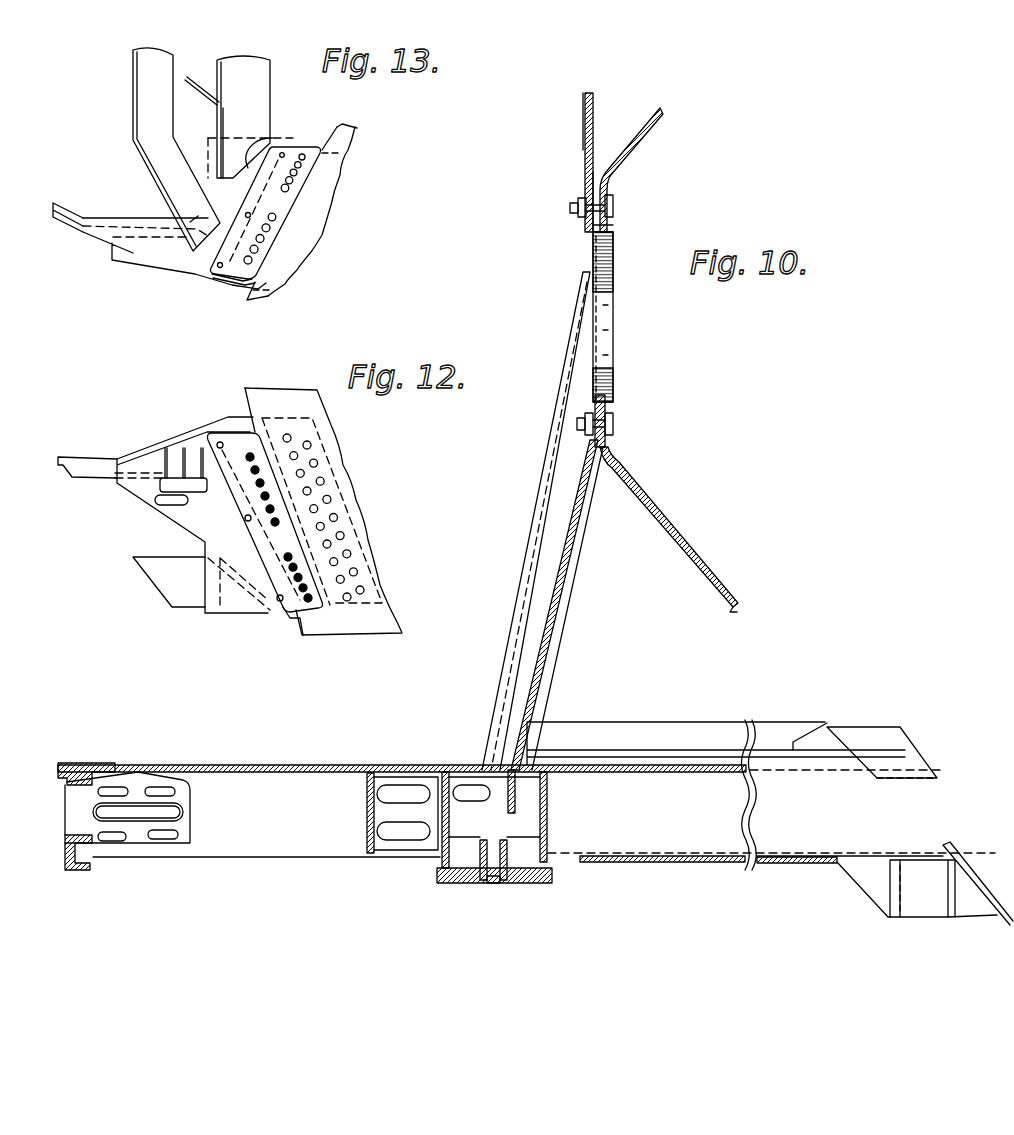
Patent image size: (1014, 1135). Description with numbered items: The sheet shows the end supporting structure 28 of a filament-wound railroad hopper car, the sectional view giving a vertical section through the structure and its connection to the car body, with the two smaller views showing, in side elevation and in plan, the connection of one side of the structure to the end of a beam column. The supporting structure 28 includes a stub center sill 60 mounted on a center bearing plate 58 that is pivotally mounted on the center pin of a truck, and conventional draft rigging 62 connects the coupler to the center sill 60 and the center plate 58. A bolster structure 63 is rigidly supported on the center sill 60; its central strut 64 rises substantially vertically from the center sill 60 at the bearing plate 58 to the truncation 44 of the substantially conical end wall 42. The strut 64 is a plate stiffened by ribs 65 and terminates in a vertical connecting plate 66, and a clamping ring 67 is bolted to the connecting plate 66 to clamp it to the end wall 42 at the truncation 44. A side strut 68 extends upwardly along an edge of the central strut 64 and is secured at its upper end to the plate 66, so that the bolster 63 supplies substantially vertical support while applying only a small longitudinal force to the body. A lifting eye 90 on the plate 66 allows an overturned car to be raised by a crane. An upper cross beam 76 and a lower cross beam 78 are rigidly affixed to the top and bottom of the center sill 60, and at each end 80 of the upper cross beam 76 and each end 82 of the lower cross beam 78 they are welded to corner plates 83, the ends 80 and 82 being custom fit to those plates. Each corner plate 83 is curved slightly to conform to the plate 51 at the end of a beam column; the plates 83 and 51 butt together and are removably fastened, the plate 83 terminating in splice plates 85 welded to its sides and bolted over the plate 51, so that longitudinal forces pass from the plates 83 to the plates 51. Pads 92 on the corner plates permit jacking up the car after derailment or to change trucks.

In FIG. 10, the supporting structure 28 is at (447, 730).
In FIG. 10, the end wall 42 is at (660, 113).
In FIG. 10, the truncation 44 is at (608, 192).
In FIG. 13, the plate 51 is at (249, 289).
In FIG. 12, the plate 51 is at (238, 422).
In FIG. 10, the center bearing plate 58 is at (540, 886).
In FIG. 10, the stub center sill 60 is at (637, 772).
In FIG. 10, the draft rigging 62 is at (207, 758).
In FIG. 10, the bolster structure 63 is at (532, 458).
In FIG. 10, the central strut 64 is at (570, 533).
In FIG. 10, the ribs 65 is at (530, 623).
In FIG. 10, the connecting plate 66 is at (593, 247).
In FIG. 10, the clamping ring 67 is at (610, 222).
In FIG. 10, the side strut 68 is at (572, 321).
In FIG. 13, the upper cross beam 76 is at (163, 97).
In FIG. 10, the upper cross beam 76 is at (907, 738).
In FIG. 13, the lower cross beam 78 is at (251, 97).
In FIG. 10, the lower cross beam 78 is at (952, 861).
In FIG. 13, the end of upper cross beam 80 is at (187, 223).
In FIG. 13, the end of lower cross beam 82 is at (270, 138).
In FIG. 13, the corner plate 83 is at (168, 263).
In FIG. 12, the corner plate 83 is at (183, 436).
In FIG. 13, the splice plate 85 is at (214, 276).
In FIG. 12, the splice plate 85 is at (286, 612).
In FIG. 10, the lifting eye 90 is at (584, 100).
In FIG. 12, the pad 92 is at (160, 485).